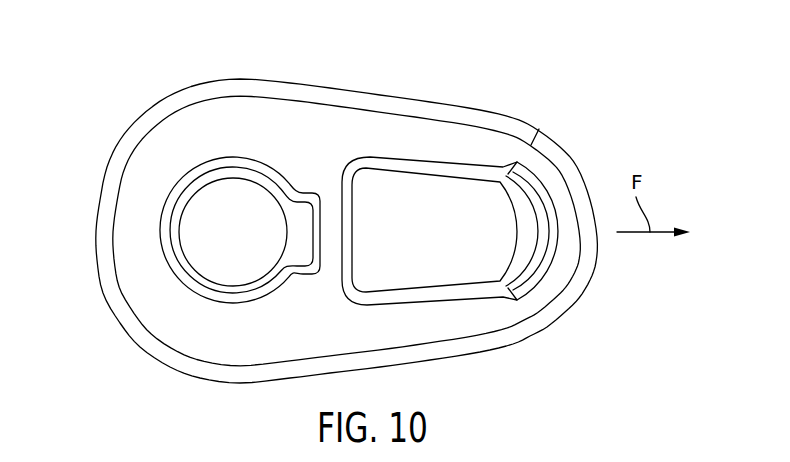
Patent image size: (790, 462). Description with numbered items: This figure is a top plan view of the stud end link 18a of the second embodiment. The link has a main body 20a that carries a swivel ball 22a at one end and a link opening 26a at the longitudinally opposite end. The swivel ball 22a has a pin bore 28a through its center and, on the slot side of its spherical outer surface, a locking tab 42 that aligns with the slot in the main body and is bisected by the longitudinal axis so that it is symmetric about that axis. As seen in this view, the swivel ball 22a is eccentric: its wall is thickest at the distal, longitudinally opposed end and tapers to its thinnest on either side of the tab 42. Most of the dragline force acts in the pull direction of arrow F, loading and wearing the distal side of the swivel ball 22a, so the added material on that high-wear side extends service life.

The main body 20a is at (448, 79).
The stud end link 18a is at (580, 341).
The swivel ball 22a is at (163, 236).
The pin bore 28a is at (228, 181).
The locking tab 42 is at (300, 258).
The link opening 26a is at (362, 290).